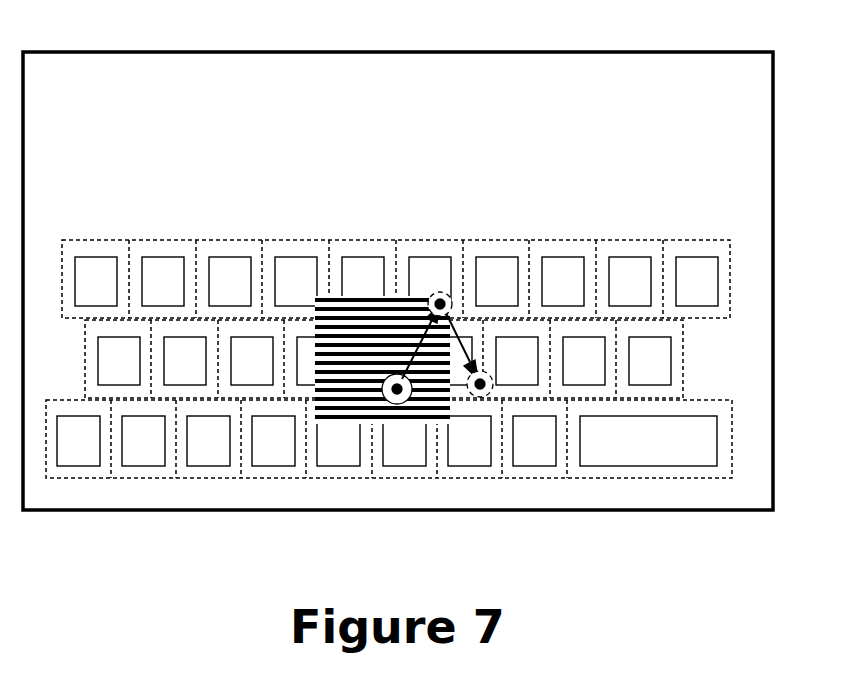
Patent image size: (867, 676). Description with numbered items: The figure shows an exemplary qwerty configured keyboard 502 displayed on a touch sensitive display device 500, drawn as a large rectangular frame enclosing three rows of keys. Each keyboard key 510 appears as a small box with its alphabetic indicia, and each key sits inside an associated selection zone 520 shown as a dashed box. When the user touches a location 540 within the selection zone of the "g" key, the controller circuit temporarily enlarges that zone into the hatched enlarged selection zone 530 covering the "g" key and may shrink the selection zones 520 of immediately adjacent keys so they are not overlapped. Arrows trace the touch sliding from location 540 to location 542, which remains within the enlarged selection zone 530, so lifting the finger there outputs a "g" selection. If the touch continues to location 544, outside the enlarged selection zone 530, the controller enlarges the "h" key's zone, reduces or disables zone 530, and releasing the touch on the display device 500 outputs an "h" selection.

The touch sensitive display device 500 is at (398, 50).
The qwerty configured keyboard 502 is at (151, 200).
The keyboard key 510 is at (360, 258).
The selection zone 520 is at (383, 240).
The enlarged selection zone 530 is at (400, 298).
The touch location 540 is at (405, 401).
The touch location 542 is at (447, 298).
The touch location 544 is at (490, 397).